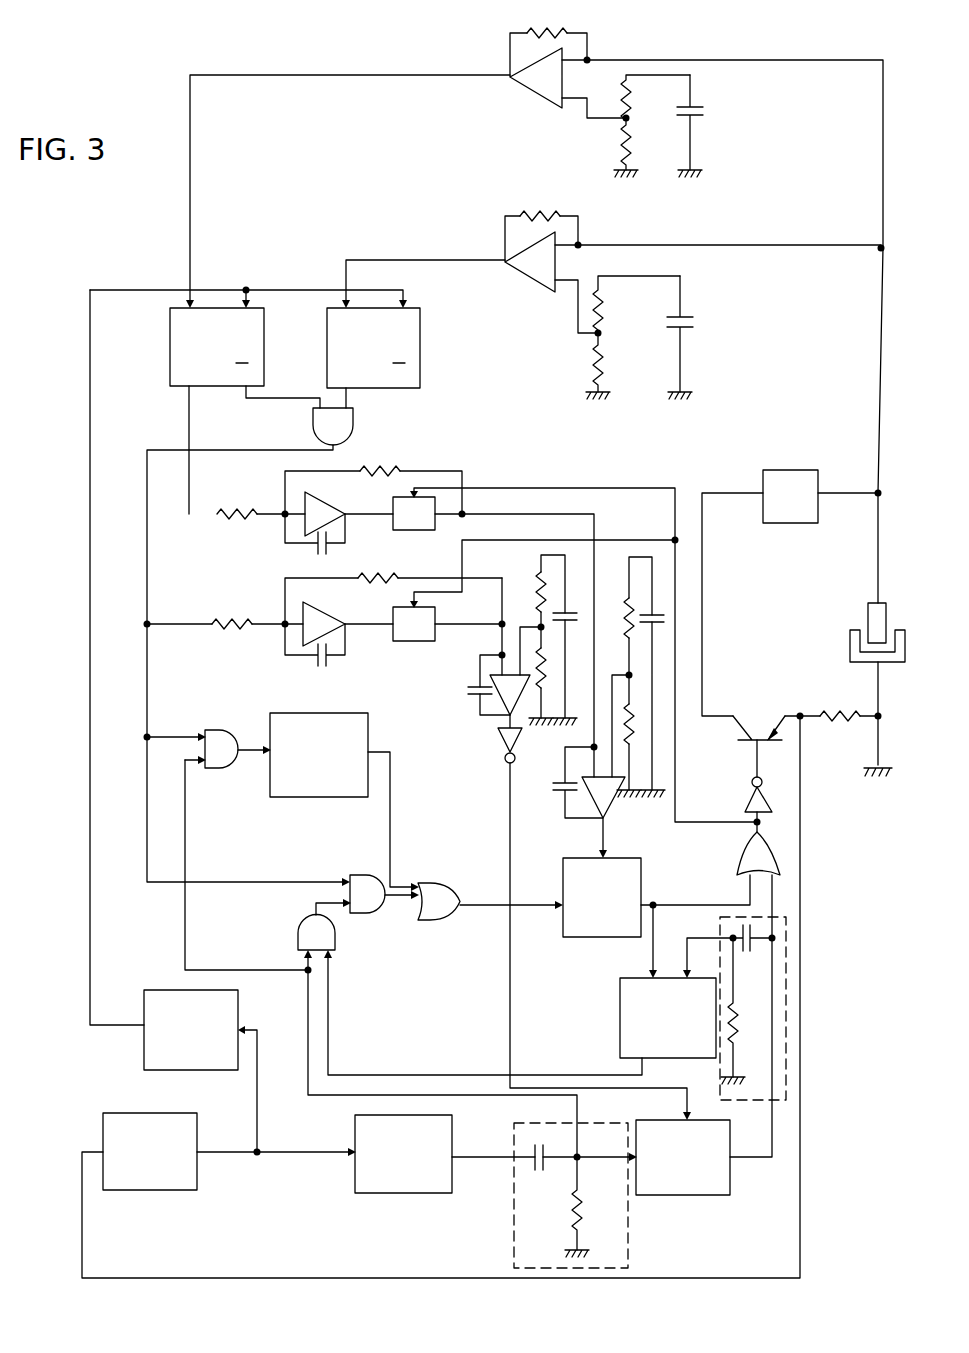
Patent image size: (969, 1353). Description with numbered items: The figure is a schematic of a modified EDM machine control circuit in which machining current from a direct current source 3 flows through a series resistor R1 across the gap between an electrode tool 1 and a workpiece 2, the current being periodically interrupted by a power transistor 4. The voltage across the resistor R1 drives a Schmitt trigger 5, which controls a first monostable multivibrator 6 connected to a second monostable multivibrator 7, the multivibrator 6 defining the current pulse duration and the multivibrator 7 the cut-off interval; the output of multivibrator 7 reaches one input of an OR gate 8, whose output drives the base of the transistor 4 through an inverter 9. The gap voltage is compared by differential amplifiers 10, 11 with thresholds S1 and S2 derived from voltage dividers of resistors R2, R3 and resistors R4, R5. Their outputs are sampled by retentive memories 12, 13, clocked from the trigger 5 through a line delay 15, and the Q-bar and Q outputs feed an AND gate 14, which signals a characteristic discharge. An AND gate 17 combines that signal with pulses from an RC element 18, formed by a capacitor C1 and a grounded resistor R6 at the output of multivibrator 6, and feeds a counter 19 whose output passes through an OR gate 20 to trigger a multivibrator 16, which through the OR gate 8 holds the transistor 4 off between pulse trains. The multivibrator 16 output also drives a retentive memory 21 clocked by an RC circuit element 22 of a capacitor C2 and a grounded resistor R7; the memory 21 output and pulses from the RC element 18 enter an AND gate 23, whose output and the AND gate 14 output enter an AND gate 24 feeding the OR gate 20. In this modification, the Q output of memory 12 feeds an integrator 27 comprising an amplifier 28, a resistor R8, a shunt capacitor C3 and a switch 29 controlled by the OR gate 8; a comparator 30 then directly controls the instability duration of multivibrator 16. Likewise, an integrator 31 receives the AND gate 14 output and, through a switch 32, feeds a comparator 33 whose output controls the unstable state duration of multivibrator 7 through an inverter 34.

The electrode tool 1 is at (868, 618).
The workpiece 2 is at (850, 642).
The source of direct current 3 is at (800, 470).
The power transistor 4 is at (742, 742).
The Schmitt trigger 5 is at (150, 1190).
The first monostable multivibrator 6 is at (403, 1193).
The second monostable multivibrator 7 is at (708, 1195).
The OR gate 8 is at (744, 856).
The inverter 9 is at (746, 800).
The differential amplifier 10 is at (550, 92).
The differential amplifier 11 is at (540, 268).
The retentive memory 12 is at (170, 347).
The retentive memory 13 is at (420, 344).
The AND gate 14 is at (353, 426).
The line delay 15 is at (144, 1004).
The multivibrator 16 is at (582, 937).
The AND gate 17 is at (216, 730).
The RC element 18 is at (508, 1232).
The counter 19 is at (306, 797).
The OR gate 20 is at (436, 888).
The retentive memory 21 is at (620, 1027).
The RC circuit element 22 is at (790, 996).
The AND gate 23 is at (335, 942).
The AND gate 24 is at (368, 875).
The integrator 27 is at (278, 518).
The amplifier 28 is at (332, 508).
The switch 29 is at (418, 531).
The comparator 30 is at (606, 808).
The integrator 31 is at (280, 614).
The switch 32 is at (418, 641).
The comparator 33 is at (488, 678).
The inverter 34 is at (497, 738).
The resistor R1 is at (855, 712).
The resistor R2 is at (626, 95).
The resistor R3 is at (625, 150).
The resistor R4 is at (603, 308).
The resistor R5 is at (593, 364).
The grounded resistor R6 is at (583, 1222).
The grounded resistor R7 is at (736, 1030).
The resistor R8 is at (392, 472).
The voltage threshold S1 is at (630, 120).
The voltage threshold S2 is at (602, 335).
The capacitor C1 is at (532, 1150).
The capacitor C2 is at (752, 928).
The shunt capacitor C3 is at (314, 548).